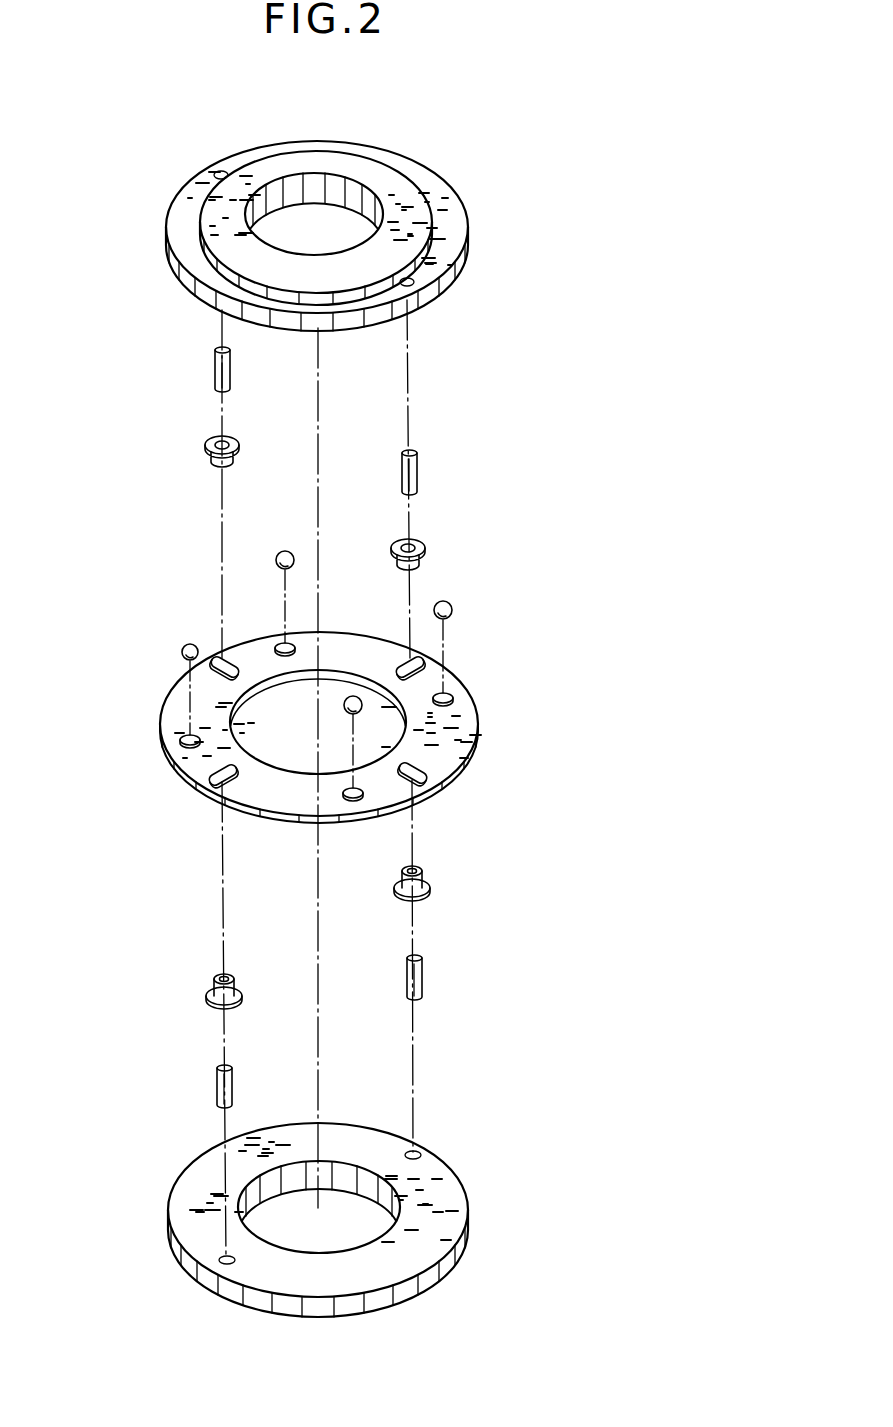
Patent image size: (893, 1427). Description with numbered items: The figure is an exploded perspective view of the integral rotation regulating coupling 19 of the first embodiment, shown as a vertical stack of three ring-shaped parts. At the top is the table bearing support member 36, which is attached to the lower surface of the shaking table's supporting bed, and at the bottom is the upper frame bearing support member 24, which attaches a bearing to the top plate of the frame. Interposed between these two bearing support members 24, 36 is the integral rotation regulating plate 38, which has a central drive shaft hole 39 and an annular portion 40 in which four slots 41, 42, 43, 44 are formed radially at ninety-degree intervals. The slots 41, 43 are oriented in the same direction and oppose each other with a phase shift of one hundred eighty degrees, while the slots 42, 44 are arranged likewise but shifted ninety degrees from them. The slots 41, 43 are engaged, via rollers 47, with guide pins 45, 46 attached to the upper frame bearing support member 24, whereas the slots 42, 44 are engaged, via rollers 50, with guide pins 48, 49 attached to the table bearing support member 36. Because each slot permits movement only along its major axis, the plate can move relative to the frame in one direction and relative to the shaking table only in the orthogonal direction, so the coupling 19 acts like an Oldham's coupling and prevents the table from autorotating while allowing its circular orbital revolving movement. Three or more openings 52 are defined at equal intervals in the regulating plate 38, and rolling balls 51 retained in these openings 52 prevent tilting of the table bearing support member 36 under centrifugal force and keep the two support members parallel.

The integral rotation regulating coupling 19 is at (350, 104).
The upper frame bearing support member 24 is at (455, 1213).
The table bearing support member 36 is at (455, 215).
The integral rotation regulating plate 38 is at (152, 723).
The drive shaft hole 39 is at (280, 752).
The annular portion 40 is at (465, 723).
The slot 41 is at (210, 785).
The slot 42 is at (218, 660).
The slot 43 is at (405, 660).
The slot 44 is at (428, 773).
The guide pin 45 is at (217, 1088).
The guide pin 46 is at (422, 978).
The roller 47 is at (430, 888).
The guide pin 48 is at (214, 365).
The guide pin 49 is at (418, 472).
The roller 50 is at (210, 442).
The rolling ball 51 is at (283, 551).
The opening 52 is at (282, 642).